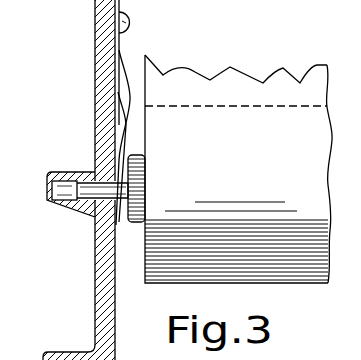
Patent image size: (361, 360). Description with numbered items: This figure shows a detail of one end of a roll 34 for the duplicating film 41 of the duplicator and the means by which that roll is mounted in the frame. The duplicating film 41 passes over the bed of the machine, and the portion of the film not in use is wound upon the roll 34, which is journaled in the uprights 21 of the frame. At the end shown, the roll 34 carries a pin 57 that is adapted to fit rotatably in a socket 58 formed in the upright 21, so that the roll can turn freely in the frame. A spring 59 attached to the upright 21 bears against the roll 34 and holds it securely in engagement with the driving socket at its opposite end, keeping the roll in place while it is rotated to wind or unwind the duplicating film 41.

The upright 21 is at (97, 76).
The roll 34 is at (130, 223).
The duplicating film 41 is at (238, 169).
The pin 57 is at (92, 190).
The socket 58 is at (52, 191).
The spring 59 is at (126, 64).